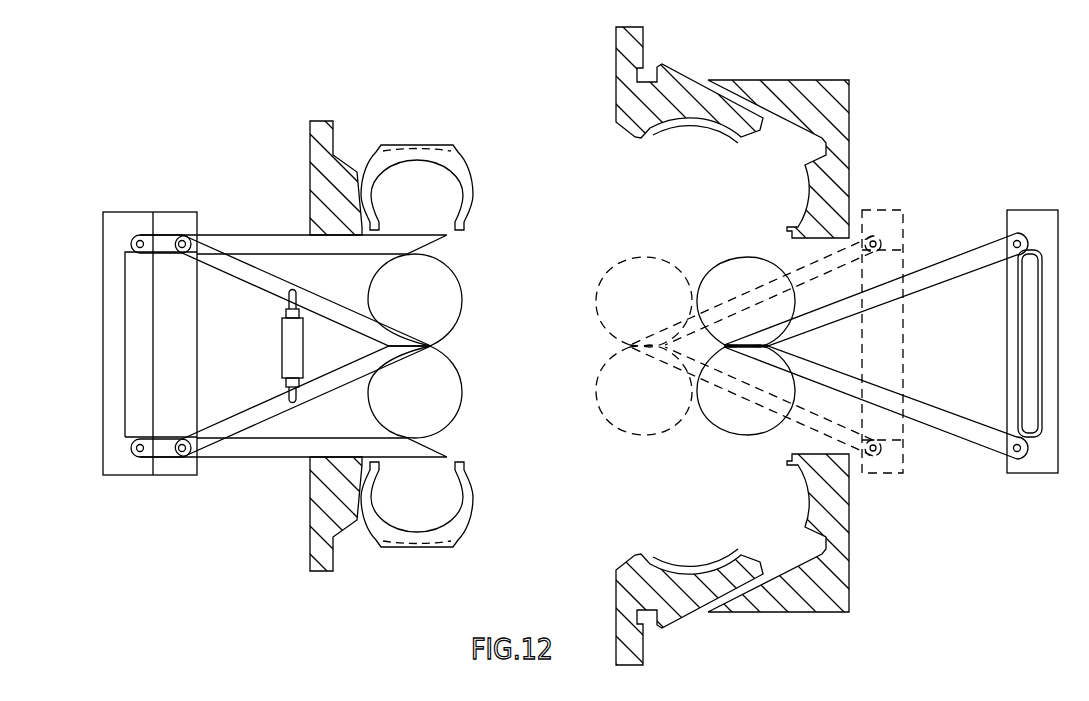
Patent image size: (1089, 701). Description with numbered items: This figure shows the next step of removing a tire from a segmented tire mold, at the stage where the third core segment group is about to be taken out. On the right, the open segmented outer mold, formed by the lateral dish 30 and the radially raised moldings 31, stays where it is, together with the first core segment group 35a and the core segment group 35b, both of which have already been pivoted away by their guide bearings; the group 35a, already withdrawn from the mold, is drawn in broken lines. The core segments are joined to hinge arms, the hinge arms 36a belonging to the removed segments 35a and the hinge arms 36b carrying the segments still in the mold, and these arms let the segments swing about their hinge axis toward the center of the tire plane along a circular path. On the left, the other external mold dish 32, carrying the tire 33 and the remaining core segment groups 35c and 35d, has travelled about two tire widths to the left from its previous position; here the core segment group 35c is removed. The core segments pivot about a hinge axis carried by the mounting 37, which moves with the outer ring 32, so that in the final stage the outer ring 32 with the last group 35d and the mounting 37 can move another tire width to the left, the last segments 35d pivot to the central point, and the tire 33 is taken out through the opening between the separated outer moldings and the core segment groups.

The lateral dish 30 is at (800, 88).
The moldings 31 is at (637, 52).
The external mold dish 32 is at (325, 140).
The tire 33 is at (408, 150).
The first core segment group 35a is at (630, 280).
The core segment group 35b is at (728, 275).
The core segment group 35c is at (442, 282).
The core segment group 35d is at (445, 180).
The hinge arms 36a is at (813, 263).
The hinge arms 36b is at (968, 255).
The mounting 37 is at (119, 228).